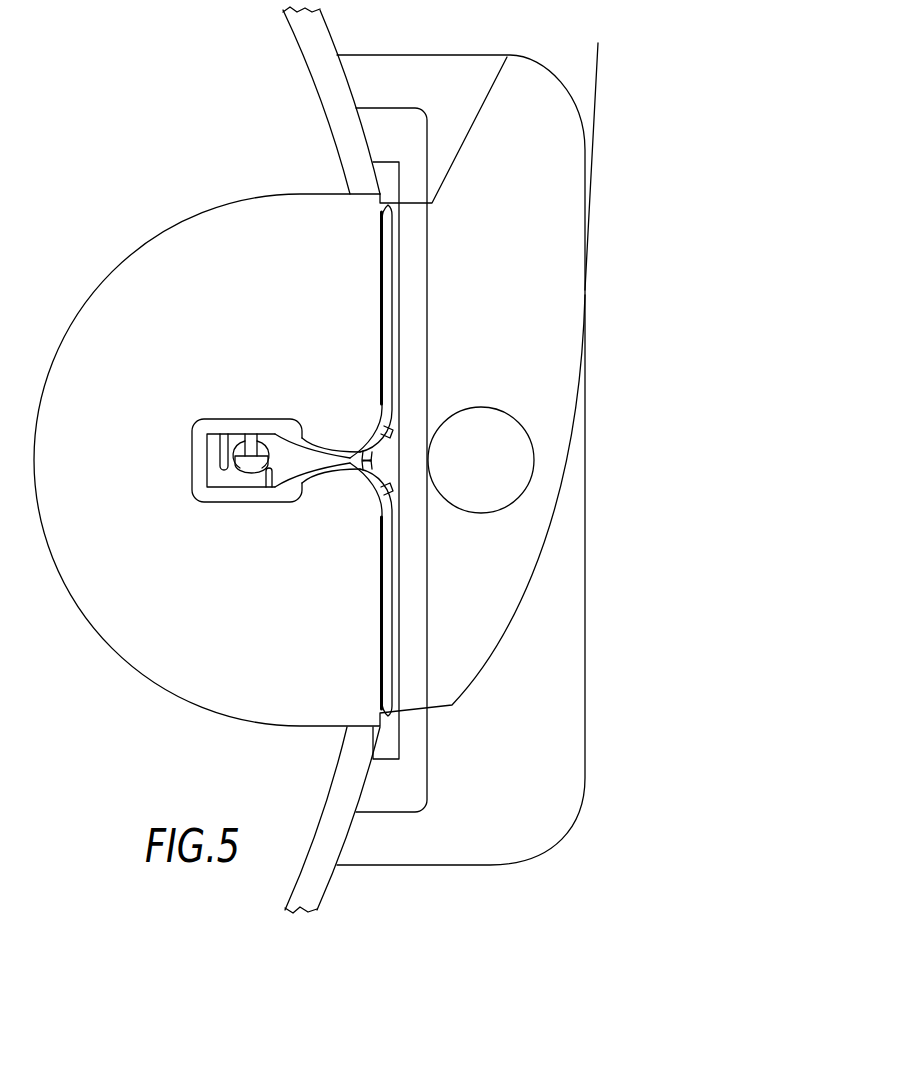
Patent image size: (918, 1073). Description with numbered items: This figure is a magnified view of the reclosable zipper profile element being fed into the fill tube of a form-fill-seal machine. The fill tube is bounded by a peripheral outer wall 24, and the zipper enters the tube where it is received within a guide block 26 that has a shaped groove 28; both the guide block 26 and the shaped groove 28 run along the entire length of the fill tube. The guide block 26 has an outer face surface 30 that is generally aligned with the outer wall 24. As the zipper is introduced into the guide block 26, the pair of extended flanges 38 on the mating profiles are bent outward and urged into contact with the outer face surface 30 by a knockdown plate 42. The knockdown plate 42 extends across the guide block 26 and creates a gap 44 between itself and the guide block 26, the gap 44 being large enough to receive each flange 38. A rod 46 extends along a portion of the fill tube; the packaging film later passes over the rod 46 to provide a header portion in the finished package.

The outer wall 24 is at (331, 108).
The guide block 26 is at (127, 277).
The shaped groove 28 is at (245, 418).
The outer face surface 30 is at (377, 243).
The extended flange 38 is at (385, 321).
The knockdown plate 42 is at (419, 290).
The gap 44 is at (390, 168).
The rod 46 is at (493, 420).